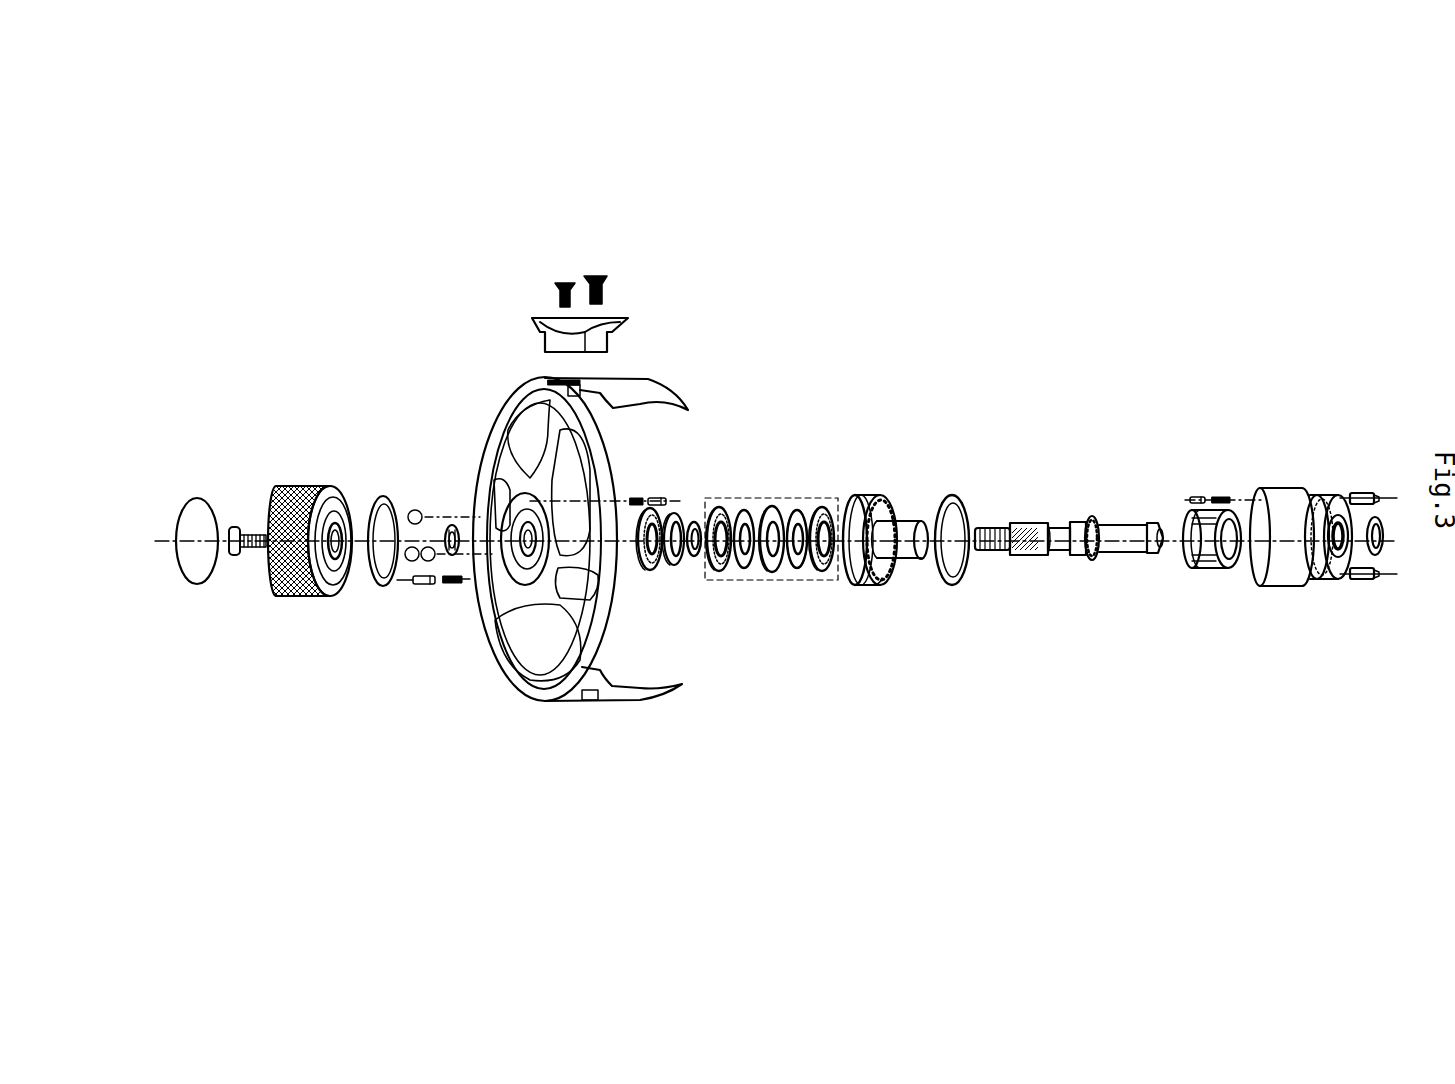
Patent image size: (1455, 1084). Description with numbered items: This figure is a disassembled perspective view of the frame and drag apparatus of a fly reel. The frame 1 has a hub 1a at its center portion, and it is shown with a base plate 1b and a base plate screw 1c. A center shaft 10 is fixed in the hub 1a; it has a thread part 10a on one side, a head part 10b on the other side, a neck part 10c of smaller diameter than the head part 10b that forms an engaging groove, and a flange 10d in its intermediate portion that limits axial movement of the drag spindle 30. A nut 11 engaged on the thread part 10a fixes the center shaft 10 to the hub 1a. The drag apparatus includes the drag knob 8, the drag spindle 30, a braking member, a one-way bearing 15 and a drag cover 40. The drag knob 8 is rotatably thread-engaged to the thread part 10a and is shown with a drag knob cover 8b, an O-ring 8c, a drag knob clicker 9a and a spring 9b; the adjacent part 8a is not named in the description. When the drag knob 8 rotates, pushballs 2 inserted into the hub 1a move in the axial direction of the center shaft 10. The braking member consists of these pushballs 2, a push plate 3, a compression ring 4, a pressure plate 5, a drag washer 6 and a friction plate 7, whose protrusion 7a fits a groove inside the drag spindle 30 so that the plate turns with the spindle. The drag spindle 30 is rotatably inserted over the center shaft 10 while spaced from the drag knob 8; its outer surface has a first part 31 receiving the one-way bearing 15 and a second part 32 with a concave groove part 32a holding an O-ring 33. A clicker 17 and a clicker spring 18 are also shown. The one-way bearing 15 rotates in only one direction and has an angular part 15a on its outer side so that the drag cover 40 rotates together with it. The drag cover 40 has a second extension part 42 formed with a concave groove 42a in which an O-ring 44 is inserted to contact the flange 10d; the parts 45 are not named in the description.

The frame 1 is at (573, 514).
The hub 1a is at (504, 629).
The base plate 1b is at (629, 345).
The base plate screw 1c is at (634, 305).
The pushballs 2 is at (396, 475).
The push plate 3 is at (649, 568).
The compression ring 4 is at (677, 570).
The pressure plate 5 is at (780, 528).
The drag washer 6 is at (770, 498).
The friction plate 7 is at (797, 560).
The protrusion 7a is at (770, 567).
The drag knob 8 is at (301, 481).
The knob screw 8a is at (219, 474).
The drag knob cover 8b is at (174, 476).
The O-ring 8c is at (359, 481).
The drag knob clicker 9a is at (401, 632).
The spring 9b is at (436, 632).
The center shaft 10 is at (1085, 497).
The thread part 10a is at (1006, 512).
The head part 10b is at (1176, 512).
The neck part 10c is at (1142, 507).
The flange 10d is at (1098, 511).
The nut 11 is at (424, 478).
The one-way bearing 15 is at (1187, 577).
The angular part 15a is at (1174, 560).
The clicker 17 is at (942, 448).
The clicker spring 18 is at (945, 448).
The drag spindle 30 is at (888, 533).
The first part 31 is at (901, 513).
The second part 32 is at (870, 514).
The concave groove part 32a is at (905, 611).
The O-ring 33 is at (971, 498).
The drag cover 40 is at (1331, 527).
The second extension part 42 is at (1370, 509).
The concave groove 42a is at (1315, 586).
The O-ring 44 is at (1389, 534).
The pins 45 is at (1356, 539).